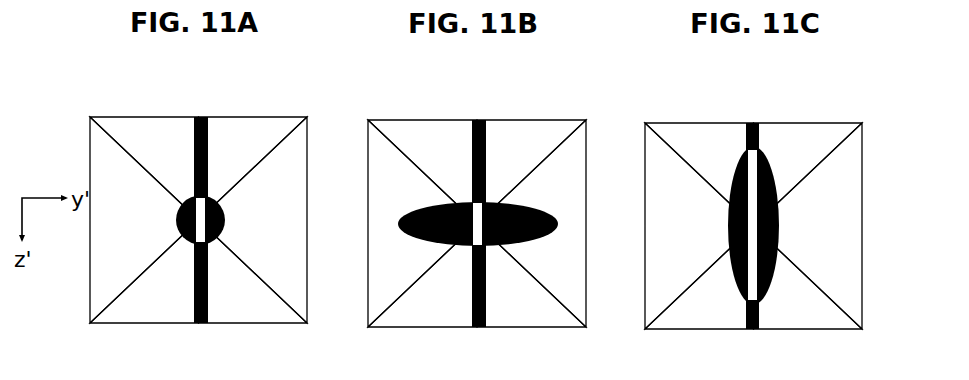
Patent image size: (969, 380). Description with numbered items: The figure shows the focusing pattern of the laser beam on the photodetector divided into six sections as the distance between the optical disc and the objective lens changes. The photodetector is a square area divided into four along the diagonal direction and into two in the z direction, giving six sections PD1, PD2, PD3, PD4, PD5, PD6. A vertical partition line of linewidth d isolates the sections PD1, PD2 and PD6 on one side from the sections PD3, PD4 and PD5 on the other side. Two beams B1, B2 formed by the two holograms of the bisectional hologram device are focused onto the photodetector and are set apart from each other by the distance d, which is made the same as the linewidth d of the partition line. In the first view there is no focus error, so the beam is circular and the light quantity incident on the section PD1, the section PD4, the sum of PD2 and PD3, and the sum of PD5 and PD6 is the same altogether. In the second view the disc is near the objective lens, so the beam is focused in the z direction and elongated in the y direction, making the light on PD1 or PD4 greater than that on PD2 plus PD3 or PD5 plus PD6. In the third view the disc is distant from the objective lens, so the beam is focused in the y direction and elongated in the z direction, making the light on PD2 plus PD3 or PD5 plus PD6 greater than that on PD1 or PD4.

In FIG. 11A, the photodetector section PD1 is at (100, 152).
In FIG. 11B, the photodetector section PD1 is at (378, 228).
In FIG. 11C, the photodetector section PD1 is at (668, 181).
In FIG. 11A, the photodetector section PD2 is at (131, 123).
In FIG. 11B, the photodetector section PD2 is at (438, 135).
In FIG. 11C, the photodetector section PD2 is at (705, 138).
In FIG. 11A, the photodetector section PD3 is at (270, 123).
In FIG. 11B, the photodetector section PD3 is at (519, 135).
In FIG. 11C, the photodetector section PD3 is at (788, 138).
In FIG. 11A, the photodetector section PD4 is at (289, 277).
In FIG. 11B, the photodetector section PD4 is at (576, 228).
In FIG. 11C, the photodetector section PD4 is at (845, 230).
In FIG. 11A, the photodetector section PD5 is at (268, 312).
In FIG. 11B, the photodetector section PD5 is at (532, 305).
In FIG. 11C, the photodetector section PD5 is at (806, 306).
In FIG. 11A, the photodetector section PD6 is at (129, 312).
In FIG. 11B, the photodetector section PD6 is at (430, 305).
In FIG. 11C, the photodetector section PD6 is at (698, 306).
In FIG. 11A, the beam B1 is at (177, 216).
In FIG. 11A, the beam B2 is at (222, 218).
In FIG. 11A, the distance d is at (173, 93).